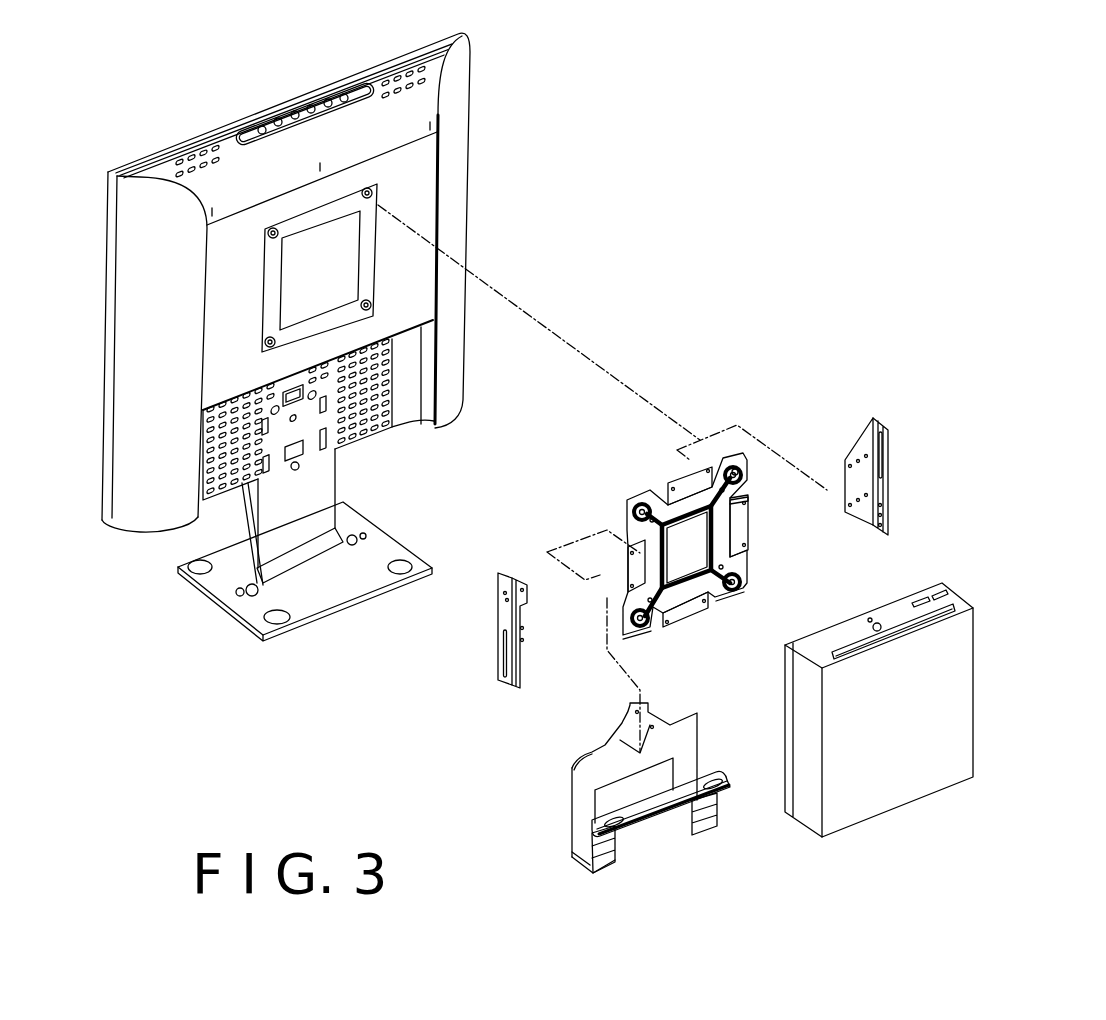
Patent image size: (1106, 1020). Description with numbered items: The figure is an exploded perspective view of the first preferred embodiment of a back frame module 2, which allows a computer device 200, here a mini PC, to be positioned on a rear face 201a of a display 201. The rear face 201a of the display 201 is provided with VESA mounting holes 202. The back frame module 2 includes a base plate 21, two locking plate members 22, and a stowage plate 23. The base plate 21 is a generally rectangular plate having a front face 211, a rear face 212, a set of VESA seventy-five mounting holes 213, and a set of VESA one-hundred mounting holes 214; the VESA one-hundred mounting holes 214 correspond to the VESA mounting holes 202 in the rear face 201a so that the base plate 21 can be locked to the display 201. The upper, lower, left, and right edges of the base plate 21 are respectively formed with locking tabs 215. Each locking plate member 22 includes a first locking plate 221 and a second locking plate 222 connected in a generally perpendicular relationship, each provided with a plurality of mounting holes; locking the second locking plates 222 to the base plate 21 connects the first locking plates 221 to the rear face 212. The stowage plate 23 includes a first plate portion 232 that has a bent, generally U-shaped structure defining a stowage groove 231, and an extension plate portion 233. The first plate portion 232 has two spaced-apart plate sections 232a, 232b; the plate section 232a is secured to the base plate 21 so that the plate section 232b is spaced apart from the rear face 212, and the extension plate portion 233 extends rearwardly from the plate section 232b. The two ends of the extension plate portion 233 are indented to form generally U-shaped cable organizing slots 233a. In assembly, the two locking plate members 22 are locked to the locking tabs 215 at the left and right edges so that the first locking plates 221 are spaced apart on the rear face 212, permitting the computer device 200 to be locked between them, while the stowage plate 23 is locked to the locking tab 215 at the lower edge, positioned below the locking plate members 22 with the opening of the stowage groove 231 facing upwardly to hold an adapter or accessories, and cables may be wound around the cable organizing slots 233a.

The back frame module 2 is at (809, 324).
The base plate 21 is at (690, 420).
The locking plate member 22 is at (892, 418).
The stowage plate 23 is at (560, 818).
The computer device 200 is at (948, 680).
The display 201 is at (455, 50).
The rear face of the display 201a is at (413, 182).
The VESA mounting holes 202 is at (367, 190).
The front face 211 is at (642, 491).
The rear face 212 is at (690, 548).
The VESA 75 mounting holes 213 is at (741, 498).
The VESA 100 mounting holes 214 is at (735, 470).
The locking tabs 215 is at (690, 482).
The first locking plate 221 is at (884, 493).
The second locking plate 222 is at (862, 444).
The stowage groove 231 is at (577, 837).
The first plate portion 232 is at (588, 858).
The plate section 232a is at (592, 768).
The plate section 232b is at (612, 862).
The extension plate portion 233 is at (658, 813).
The cable organizing slots 233a is at (612, 822).